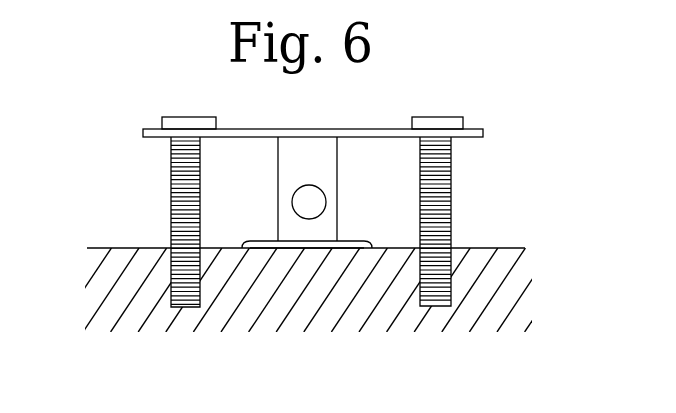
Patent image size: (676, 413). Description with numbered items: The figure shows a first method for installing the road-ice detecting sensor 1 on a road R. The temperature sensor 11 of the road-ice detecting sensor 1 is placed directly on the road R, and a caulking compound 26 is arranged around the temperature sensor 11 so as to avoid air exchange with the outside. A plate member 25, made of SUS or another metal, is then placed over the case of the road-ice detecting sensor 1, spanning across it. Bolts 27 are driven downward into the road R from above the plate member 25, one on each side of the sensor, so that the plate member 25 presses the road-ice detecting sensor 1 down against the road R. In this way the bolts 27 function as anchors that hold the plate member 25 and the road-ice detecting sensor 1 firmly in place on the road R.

The road-ice detecting sensor 1 is at (337, 192).
The temperature sensor 11 is at (309, 249).
The plate member 25 is at (377, 129).
The caulking compound 26 is at (368, 241).
The bolts 27 is at (171, 220).
The road R is at (115, 248).